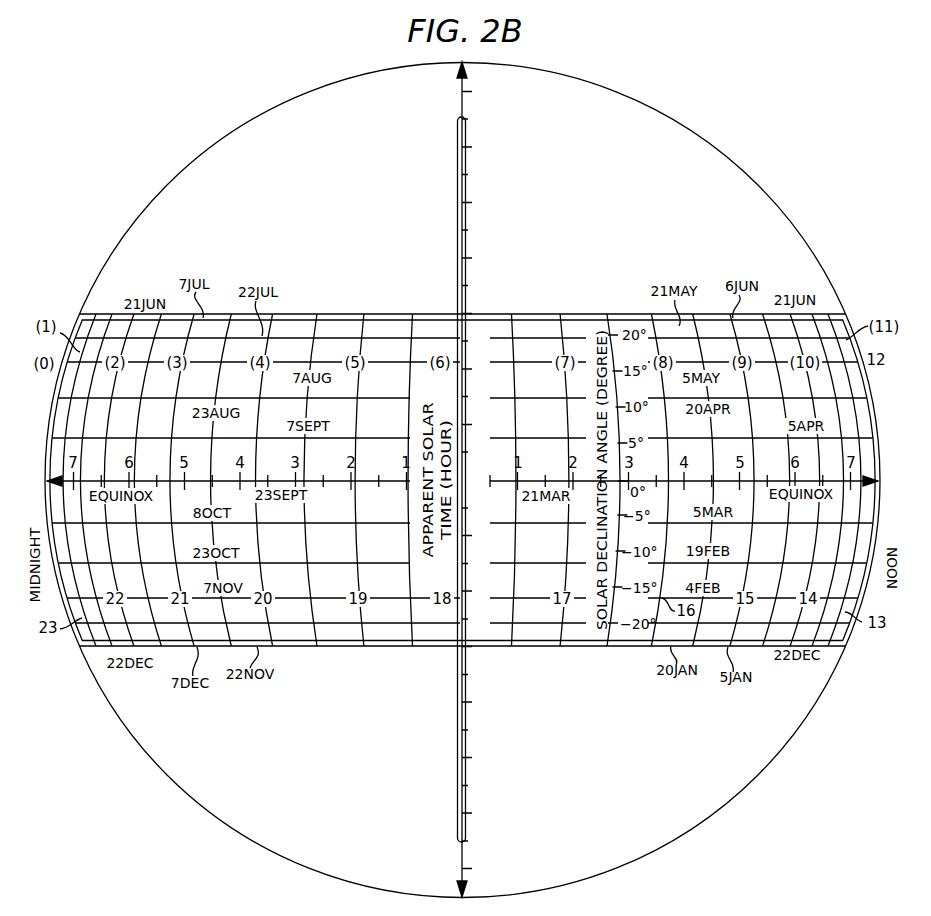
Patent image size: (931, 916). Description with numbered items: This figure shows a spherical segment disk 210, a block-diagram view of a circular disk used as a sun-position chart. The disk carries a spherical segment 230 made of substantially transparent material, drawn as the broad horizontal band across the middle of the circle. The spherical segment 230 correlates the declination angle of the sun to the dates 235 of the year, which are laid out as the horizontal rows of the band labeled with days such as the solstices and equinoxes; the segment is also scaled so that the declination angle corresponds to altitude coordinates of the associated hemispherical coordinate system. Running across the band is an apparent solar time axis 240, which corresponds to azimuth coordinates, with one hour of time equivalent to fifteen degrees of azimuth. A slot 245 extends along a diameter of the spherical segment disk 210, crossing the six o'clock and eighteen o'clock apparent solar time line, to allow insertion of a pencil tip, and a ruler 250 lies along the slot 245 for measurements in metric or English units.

The spherical segment disk 210 is at (291, 103).
The spherical segment 230 is at (102, 333).
The dates 235 is at (352, 334).
The apparent solar time axis 240 is at (170, 538).
The slot 245 is at (458, 249).
The ruler 250 is at (470, 222).